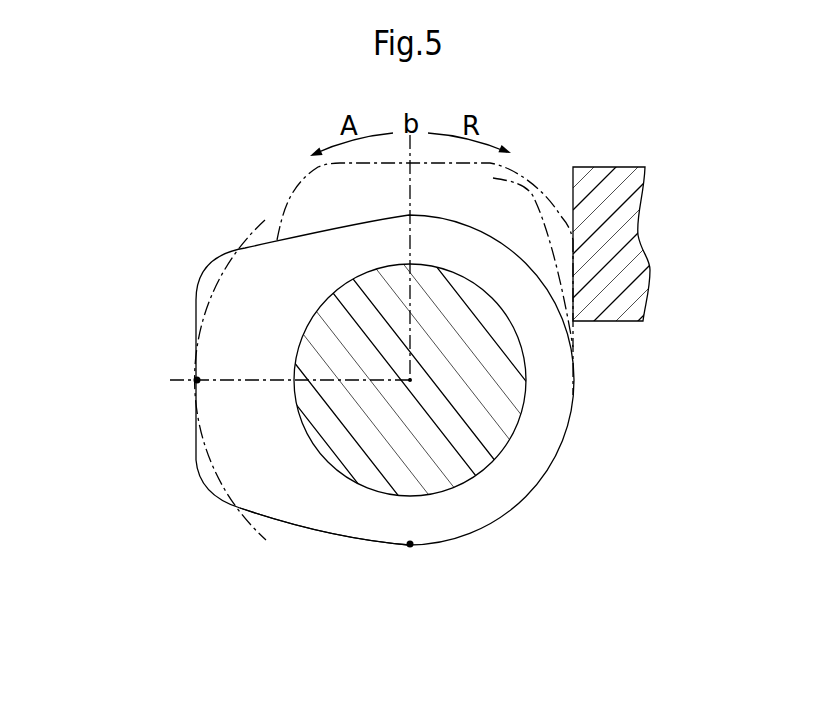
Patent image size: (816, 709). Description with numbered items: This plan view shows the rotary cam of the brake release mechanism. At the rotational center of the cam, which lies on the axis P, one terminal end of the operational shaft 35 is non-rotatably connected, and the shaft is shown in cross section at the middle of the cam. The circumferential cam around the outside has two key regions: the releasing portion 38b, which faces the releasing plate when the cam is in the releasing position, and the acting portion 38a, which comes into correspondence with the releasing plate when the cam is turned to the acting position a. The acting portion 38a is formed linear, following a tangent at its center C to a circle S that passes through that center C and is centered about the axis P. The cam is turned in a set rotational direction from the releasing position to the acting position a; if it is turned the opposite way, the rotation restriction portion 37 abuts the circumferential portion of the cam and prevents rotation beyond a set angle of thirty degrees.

The operational shaft 35 is at (480, 442).
The rotation restriction portion 37 is at (610, 167).
The acting portion 38a is at (200, 452).
The releasing portion 38b is at (410, 548).
The circle S is at (255, 250).
The acting position a is at (160, 380).
The center of the acting portion C is at (196, 381).
The axis P is at (411, 380).